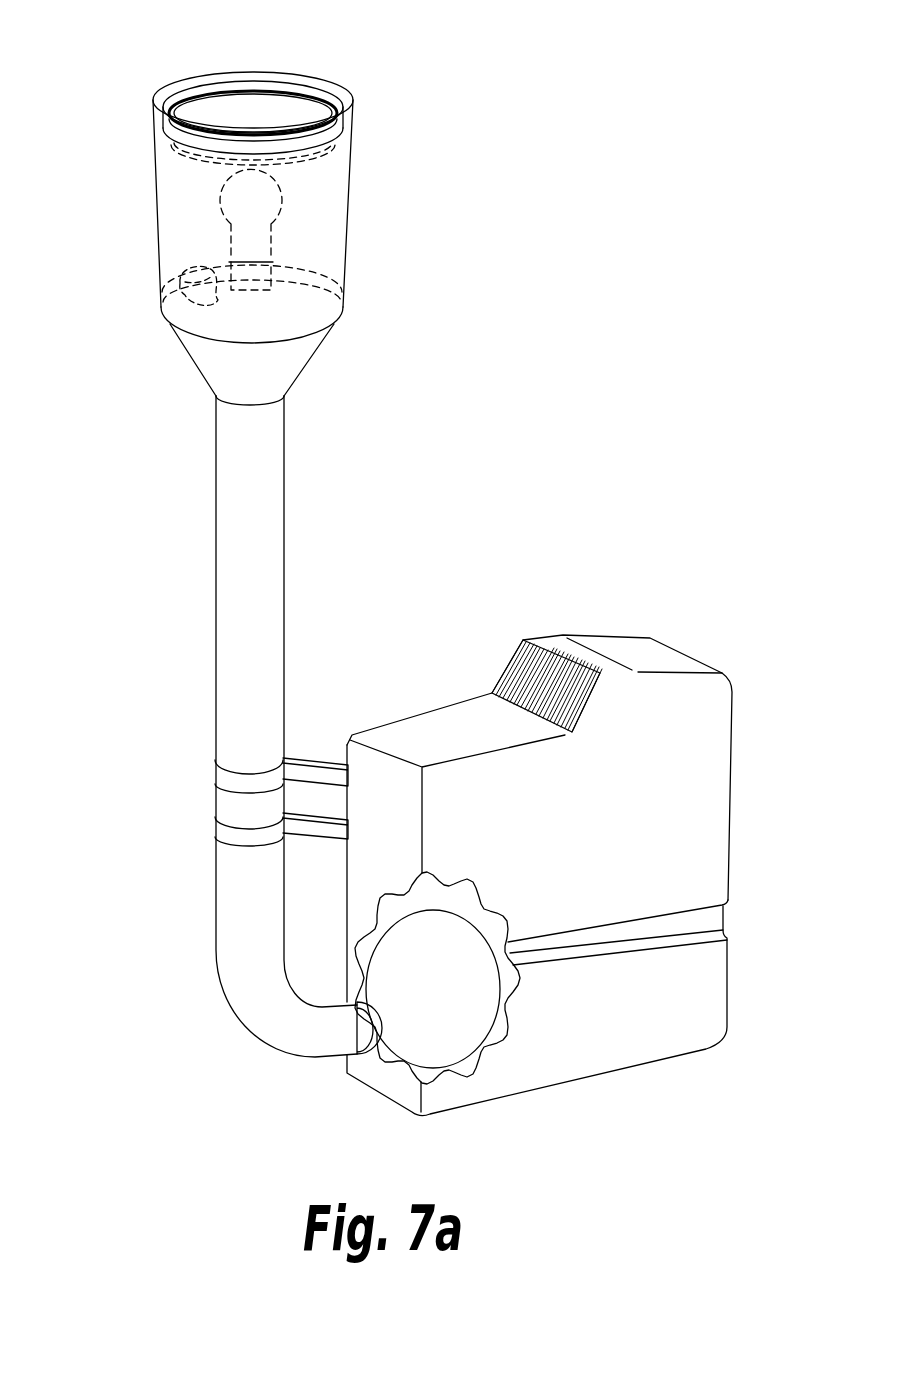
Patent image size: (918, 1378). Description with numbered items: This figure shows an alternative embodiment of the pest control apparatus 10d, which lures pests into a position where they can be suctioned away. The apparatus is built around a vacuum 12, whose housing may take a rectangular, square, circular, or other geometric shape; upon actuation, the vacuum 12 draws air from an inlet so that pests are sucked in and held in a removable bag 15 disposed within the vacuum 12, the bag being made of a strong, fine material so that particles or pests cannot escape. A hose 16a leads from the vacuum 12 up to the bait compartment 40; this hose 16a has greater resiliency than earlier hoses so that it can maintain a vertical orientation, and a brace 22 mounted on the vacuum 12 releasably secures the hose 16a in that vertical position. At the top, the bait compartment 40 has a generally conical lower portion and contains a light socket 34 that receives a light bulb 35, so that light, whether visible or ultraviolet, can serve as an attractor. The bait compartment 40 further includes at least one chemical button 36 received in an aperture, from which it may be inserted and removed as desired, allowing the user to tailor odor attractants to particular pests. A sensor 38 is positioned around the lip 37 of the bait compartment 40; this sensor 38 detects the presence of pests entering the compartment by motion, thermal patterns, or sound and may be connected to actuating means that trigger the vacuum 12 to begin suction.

The pest control apparatus 10d is at (708, 612).
The vacuum 12 is at (660, 833).
The removable bag 15 is at (468, 1012).
The hose 16a is at (285, 565).
The brace 22 is at (215, 823).
The light socket 34 is at (343, 283).
The light bulb 35 is at (282, 182).
The chemical button 36 is at (183, 293).
The lip 37 is at (343, 102).
The sensor 38 is at (285, 93).
The bait compartment 40 is at (158, 258).